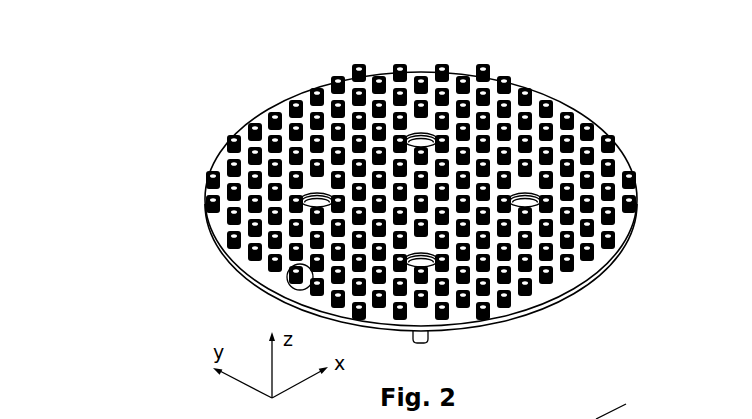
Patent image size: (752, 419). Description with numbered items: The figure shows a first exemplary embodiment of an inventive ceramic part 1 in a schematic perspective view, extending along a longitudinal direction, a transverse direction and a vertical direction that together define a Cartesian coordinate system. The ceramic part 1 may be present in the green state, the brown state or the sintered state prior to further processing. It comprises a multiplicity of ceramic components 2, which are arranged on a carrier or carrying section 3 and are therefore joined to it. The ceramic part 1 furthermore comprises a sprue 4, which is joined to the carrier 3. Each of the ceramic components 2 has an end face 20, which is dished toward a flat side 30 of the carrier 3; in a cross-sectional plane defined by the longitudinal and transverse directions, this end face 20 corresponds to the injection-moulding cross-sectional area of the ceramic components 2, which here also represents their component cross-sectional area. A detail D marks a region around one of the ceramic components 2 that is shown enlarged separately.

The ceramic part 1 is at (620, 90).
The ceramic components 2 is at (293, 98).
The carrier 3 is at (205, 153).
The sprue 4 is at (430, 338).
The end face 20 is at (599, 294).
The flat side 30 is at (580, 276).
The detail D is at (287, 278).